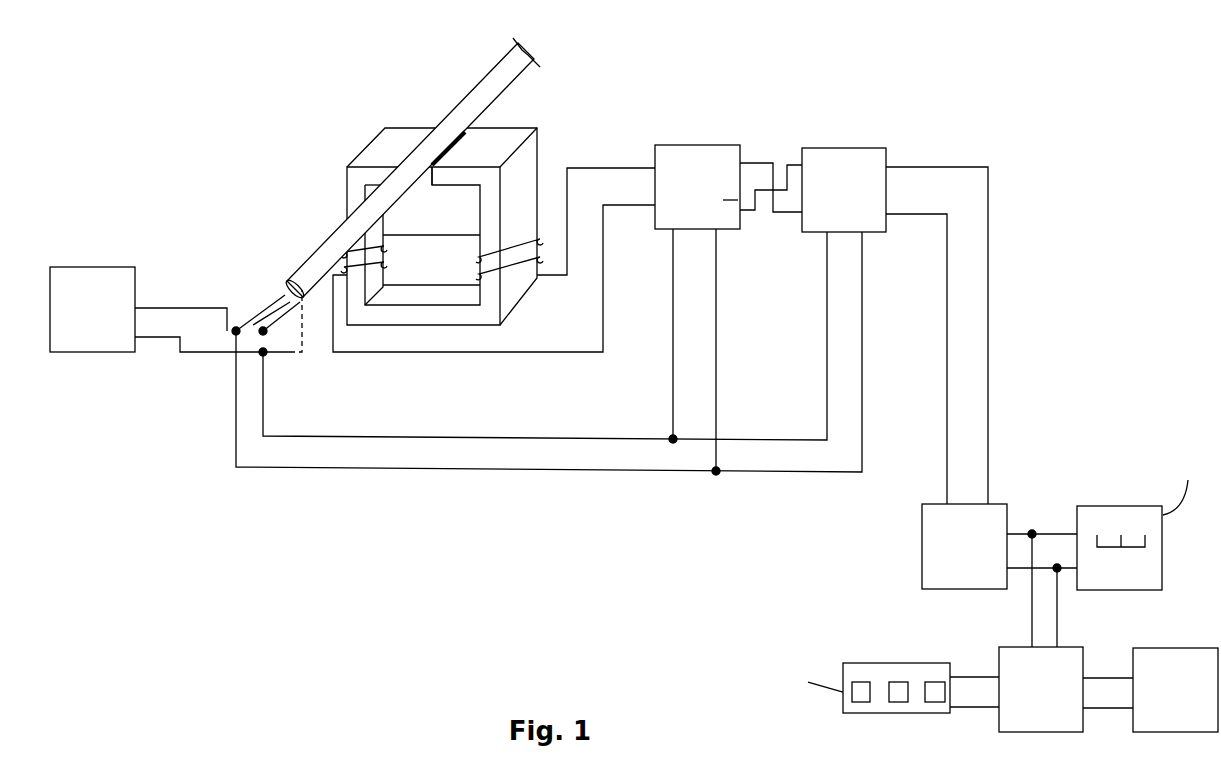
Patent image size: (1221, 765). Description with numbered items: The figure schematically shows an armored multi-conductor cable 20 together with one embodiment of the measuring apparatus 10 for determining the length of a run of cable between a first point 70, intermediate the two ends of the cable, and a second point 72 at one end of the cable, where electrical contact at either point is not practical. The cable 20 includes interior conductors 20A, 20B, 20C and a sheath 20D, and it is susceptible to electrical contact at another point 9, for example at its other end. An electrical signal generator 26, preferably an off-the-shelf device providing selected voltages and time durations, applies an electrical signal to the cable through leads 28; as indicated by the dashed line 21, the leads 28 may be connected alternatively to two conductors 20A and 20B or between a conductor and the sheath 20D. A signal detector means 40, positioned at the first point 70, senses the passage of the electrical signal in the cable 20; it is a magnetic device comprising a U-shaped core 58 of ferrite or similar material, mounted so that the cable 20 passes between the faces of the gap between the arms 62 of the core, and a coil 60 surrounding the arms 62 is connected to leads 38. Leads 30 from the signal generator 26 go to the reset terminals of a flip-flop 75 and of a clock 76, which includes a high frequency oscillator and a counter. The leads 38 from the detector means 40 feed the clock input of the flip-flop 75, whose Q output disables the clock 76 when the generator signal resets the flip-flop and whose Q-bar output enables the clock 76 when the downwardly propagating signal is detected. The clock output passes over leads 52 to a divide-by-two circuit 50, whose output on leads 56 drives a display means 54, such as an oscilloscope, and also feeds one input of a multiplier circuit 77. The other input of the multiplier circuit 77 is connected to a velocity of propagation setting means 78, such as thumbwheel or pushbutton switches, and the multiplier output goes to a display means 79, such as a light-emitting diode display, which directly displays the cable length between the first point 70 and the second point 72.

The electrical contact point 9 is at (284, 334).
The cable length measuring apparatus 10 is at (640, 90).
The armored multi-conductor cable 20 is at (318, 242).
The interior conductor 20A is at (264, 307).
The interior conductor 20B is at (278, 292).
The interior conductor 20C is at (255, 318).
The sheath 20D is at (306, 290).
The dashed line 21 is at (297, 355).
The electrical signal generator 26 is at (77, 267).
The leads 28 is at (160, 338).
The leads 30 is at (408, 468).
The leads 38 is at (628, 205).
The signal detector means 40 is at (365, 143).
The divide-by-two circuit 50 is at (922, 580).
The leads 52 is at (930, 213).
The display means 54 is at (1110, 507).
The leads 56 is at (1070, 570).
The U-shaped core 58 is at (540, 158).
The coil 60 is at (370, 263).
The arms of the core 62 is at (432, 175).
The first point 70 is at (440, 138).
The second point 72 is at (528, 53).
The flip-flop 75 is at (683, 150).
The clock 76 is at (830, 150).
The multiplier circuit 77 is at (1073, 653).
The velocity of propagation setting means 78 is at (878, 670).
The display means 79 is at (1158, 648).